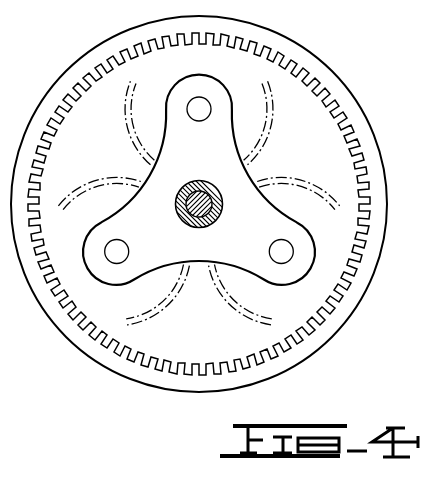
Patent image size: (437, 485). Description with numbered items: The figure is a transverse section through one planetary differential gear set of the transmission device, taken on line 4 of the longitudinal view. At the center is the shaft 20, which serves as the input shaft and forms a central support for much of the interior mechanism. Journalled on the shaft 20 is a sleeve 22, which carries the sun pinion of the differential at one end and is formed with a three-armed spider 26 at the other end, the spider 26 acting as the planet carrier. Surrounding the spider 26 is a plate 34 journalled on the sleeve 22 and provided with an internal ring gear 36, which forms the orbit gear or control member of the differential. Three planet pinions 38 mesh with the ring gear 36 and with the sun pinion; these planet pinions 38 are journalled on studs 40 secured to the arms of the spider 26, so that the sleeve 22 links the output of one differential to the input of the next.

The shaft 20 is at (222, 208).
The sleeve 22 is at (176, 208).
The three-armed spider 26 is at (199, 180).
The plate 34 is at (170, 388).
The internal ring gear 36 is at (358, 143).
The planet pinions 38 is at (198, 189).
The studs 40 is at (206, 117).
The housing member 4 is at (3, 120).